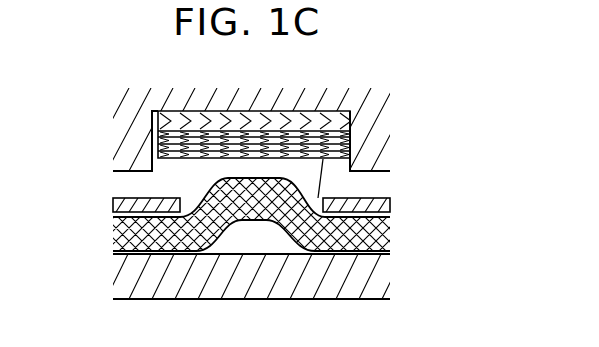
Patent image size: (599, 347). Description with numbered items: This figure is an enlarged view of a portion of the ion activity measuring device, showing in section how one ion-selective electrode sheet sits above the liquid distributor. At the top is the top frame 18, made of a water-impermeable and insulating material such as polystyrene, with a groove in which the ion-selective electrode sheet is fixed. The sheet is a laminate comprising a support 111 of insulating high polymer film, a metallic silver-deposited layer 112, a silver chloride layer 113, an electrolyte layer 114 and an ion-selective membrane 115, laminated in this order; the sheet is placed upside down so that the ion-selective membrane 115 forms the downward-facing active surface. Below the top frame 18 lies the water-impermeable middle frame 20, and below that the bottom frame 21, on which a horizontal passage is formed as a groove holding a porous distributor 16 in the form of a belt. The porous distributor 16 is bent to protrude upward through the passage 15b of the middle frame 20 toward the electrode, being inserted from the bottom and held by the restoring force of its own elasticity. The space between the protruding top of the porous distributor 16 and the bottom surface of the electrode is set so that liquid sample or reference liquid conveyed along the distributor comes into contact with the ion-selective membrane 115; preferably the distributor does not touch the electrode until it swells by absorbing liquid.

The passage 15b is at (312, 110).
The porous distributor 16 is at (386, 232).
The top frame 18 is at (122, 136).
The water-impermeable middle frame 20 is at (120, 205).
The bottom frame 21 is at (378, 282).
The support 111 is at (350, 110).
The metallic silver-deposited layer 112 is at (348, 128).
The silver chloride layer 113 is at (352, 137).
The electrolyte layer 114 is at (352, 146).
The ion-selective membrane 115 is at (352, 157).